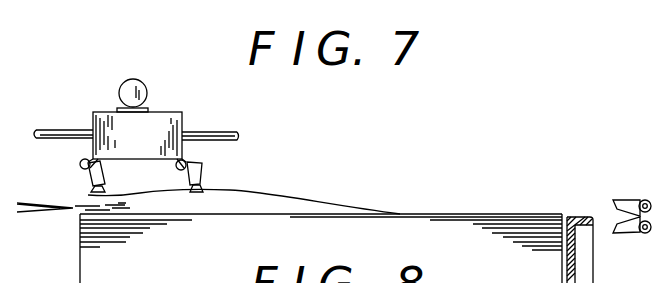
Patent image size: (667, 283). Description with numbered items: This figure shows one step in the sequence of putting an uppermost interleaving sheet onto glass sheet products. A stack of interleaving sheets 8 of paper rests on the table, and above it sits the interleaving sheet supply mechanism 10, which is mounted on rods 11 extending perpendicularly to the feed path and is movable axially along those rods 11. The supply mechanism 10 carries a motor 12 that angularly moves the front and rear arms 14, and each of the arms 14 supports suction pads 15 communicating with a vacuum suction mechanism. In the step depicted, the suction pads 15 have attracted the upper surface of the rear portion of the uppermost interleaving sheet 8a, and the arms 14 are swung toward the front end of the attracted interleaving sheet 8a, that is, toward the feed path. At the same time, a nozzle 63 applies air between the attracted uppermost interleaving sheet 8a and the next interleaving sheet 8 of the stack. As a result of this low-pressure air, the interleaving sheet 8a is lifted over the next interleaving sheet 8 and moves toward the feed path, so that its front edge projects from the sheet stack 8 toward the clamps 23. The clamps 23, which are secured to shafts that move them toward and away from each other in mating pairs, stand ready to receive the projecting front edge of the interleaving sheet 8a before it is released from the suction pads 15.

The interleaving sheet 8 is at (370, 236).
The uppermost interleaving sheet 8a is at (296, 201).
The interleaving sheet supply mechanism 10 is at (164, 104).
The rods 11 is at (52, 130).
The motor 12 is at (136, 84).
The arms 14 is at (85, 156).
The suction pads 15 is at (88, 179).
The clamps 23 is at (625, 199).
The nozzle 63 is at (32, 208).